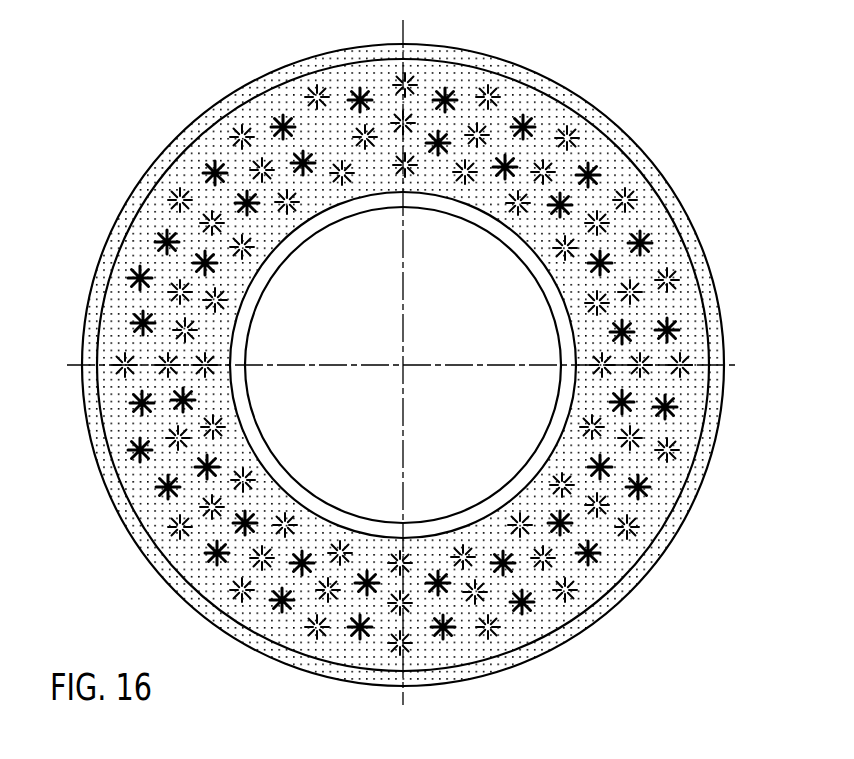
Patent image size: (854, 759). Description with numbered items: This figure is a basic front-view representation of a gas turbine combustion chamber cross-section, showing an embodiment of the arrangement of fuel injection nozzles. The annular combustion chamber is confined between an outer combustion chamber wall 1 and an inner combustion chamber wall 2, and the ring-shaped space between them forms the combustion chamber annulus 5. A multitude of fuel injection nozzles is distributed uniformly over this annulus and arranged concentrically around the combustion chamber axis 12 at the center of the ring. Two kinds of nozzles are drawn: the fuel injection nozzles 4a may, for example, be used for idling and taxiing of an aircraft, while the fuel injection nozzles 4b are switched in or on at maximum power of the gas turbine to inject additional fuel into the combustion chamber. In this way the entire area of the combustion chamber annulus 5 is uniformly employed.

The outer combustion chamber wall 1 is at (584, 109).
The inner combustion chamber wall 2 is at (557, 450).
The fuel injection nozzles 4a is at (591, 172).
The fuel injection nozzles 4b is at (628, 202).
The combustion chamber annulus 5 is at (690, 425).
The combustion chamber axis 12 is at (403, 365).